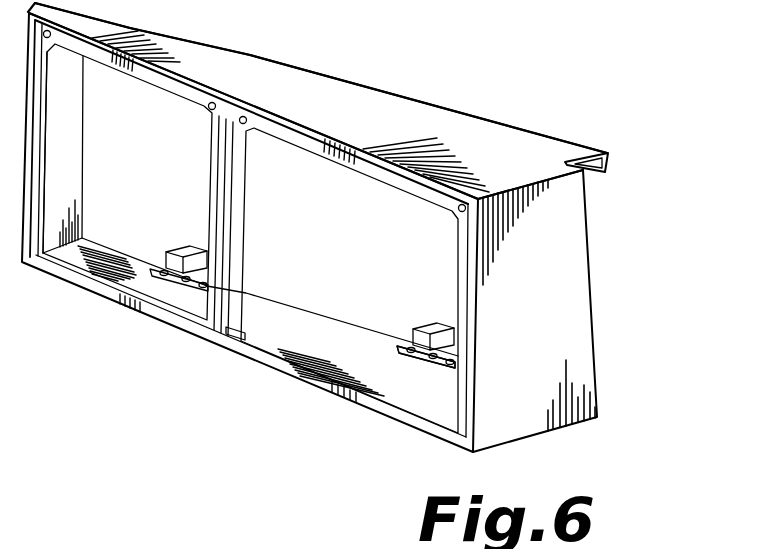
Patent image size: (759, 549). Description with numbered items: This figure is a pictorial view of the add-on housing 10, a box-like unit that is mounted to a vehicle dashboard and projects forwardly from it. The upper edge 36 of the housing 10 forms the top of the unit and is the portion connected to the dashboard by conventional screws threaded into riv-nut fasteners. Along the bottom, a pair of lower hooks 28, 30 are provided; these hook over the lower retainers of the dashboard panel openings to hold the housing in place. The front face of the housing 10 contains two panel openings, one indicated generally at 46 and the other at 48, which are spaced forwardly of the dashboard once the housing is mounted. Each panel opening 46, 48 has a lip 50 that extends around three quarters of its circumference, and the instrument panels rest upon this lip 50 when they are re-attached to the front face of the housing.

The add-on housing 10 is at (583, 293).
The upper edge 36 is at (423, 101).
The panel opening 46 is at (54, 194).
The lip 50 is at (242, 318).
The lower hook 28 is at (183, 247).
The lower hook 30 is at (432, 325).
The panel opening 48 is at (446, 374).